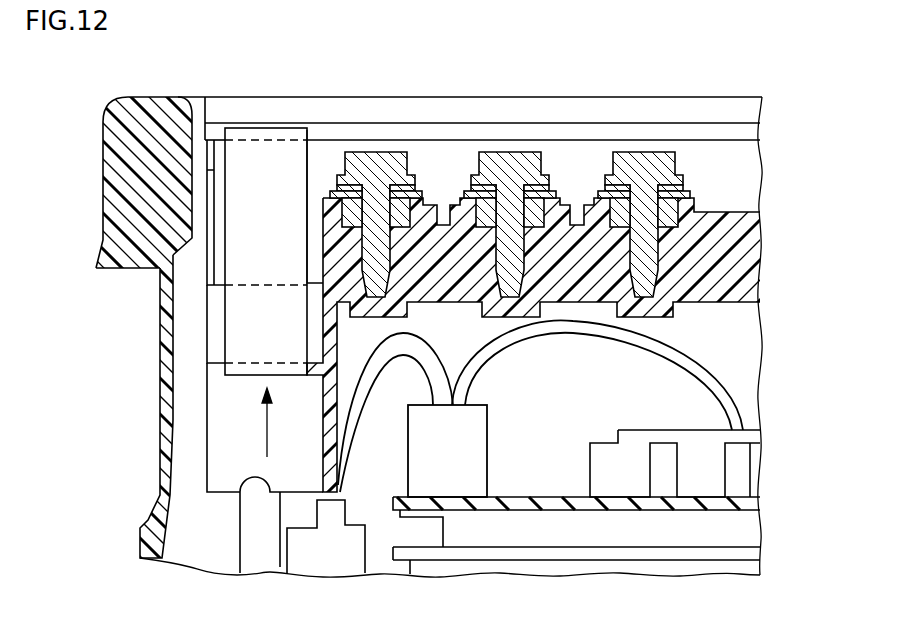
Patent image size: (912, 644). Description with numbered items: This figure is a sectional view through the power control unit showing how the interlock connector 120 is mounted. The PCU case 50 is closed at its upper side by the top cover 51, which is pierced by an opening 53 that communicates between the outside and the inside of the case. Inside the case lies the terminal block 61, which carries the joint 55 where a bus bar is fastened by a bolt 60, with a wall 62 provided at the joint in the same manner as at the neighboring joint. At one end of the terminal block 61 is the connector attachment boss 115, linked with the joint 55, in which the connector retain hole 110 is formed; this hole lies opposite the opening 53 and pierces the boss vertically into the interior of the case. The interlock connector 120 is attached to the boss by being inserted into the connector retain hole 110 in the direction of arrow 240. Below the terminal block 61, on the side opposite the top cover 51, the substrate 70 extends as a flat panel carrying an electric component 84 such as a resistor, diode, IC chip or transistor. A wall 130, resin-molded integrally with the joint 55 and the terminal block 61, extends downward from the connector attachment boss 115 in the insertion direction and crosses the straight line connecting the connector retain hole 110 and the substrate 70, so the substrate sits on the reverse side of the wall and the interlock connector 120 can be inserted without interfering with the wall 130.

The PCU case 50 is at (141, 538).
The top cover 51 is at (152, 96).
The opening 53 is at (207, 113).
The joint 55 is at (712, 223).
The bolt 60 is at (380, 162).
The terminal block 61 is at (207, 193).
The wall 62 is at (580, 167).
The substrate 70 is at (750, 502).
The electric component 84 is at (740, 472).
The connector retain hole 110 is at (212, 347).
The connector attachment boss 115 is at (217, 320).
The interlock connector 120 is at (263, 157).
The wall 130 is at (340, 440).
The arrow 240 is at (264, 432).